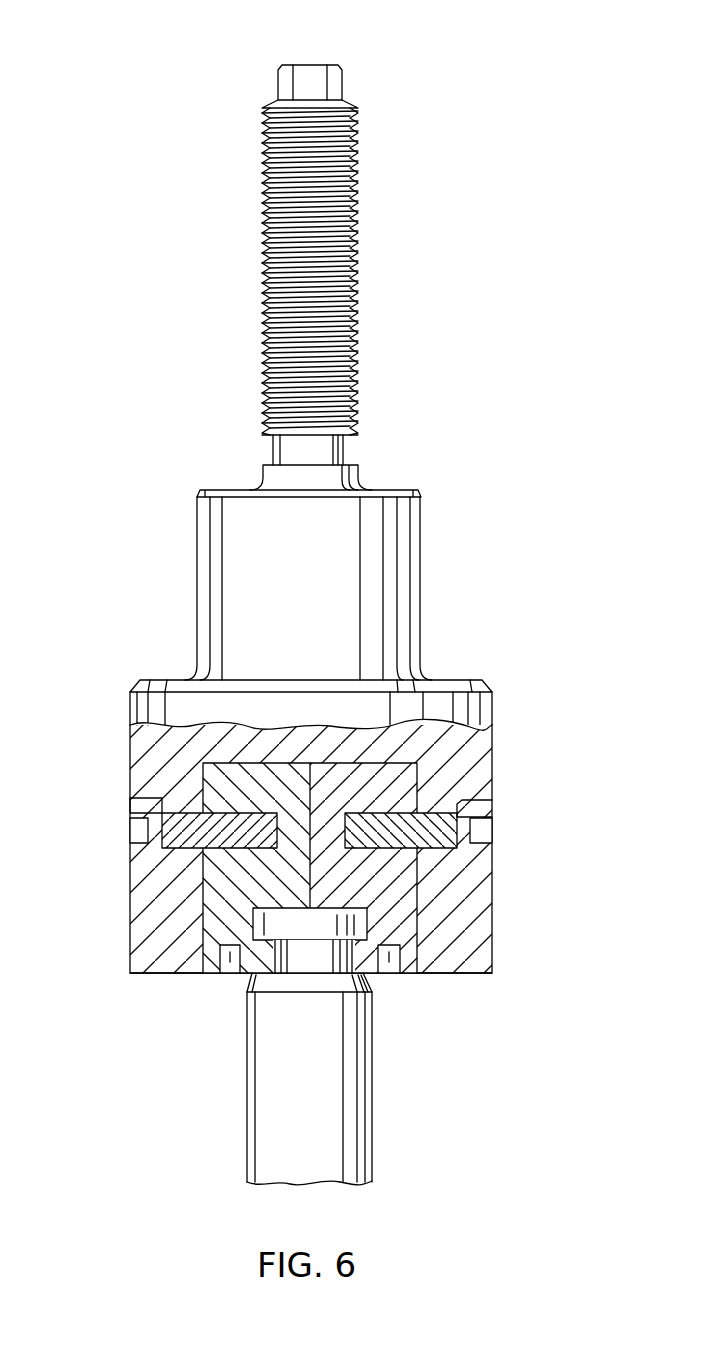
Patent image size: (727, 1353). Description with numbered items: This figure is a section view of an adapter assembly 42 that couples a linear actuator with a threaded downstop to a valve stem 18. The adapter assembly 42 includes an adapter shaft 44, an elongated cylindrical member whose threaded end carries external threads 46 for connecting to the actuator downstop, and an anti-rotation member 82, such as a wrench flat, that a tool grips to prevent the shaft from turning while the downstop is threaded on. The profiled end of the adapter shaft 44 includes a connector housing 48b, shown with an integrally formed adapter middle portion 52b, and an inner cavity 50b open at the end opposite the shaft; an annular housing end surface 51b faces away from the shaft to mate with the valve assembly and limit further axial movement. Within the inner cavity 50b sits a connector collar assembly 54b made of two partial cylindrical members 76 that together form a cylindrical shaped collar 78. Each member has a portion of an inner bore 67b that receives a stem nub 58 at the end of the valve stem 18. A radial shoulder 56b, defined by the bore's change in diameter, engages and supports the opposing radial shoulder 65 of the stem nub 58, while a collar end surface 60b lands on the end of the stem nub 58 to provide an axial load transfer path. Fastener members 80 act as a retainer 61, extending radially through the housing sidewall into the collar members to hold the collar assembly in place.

The valve stem 18 is at (270, 1133).
The adapter assembly 42 is at (465, 436).
The adapter shaft 44 is at (330, 160).
The external threads 46 is at (263, 224).
The connector housing 48b is at (460, 751).
The inner cavity 50b is at (245, 923).
The housing end surface 51b is at (465, 980).
The adapter middle portion 52b is at (398, 568).
The connector collar assembly 54b is at (385, 775).
The radial shoulder 56b is at (222, 922).
The stem nub 58 is at (255, 887).
The collar end surface 60b is at (302, 913).
The retainer 61 is at (513, 821).
The opposing radial shoulder 65 is at (347, 978).
The inner bore 67b is at (345, 897).
The partial cylindrical members 76 is at (235, 775).
The cylindrical shaped collar 78 is at (432, 908).
The fastener members 80 is at (130, 850).
The anti-rotation member 82 is at (313, 85).